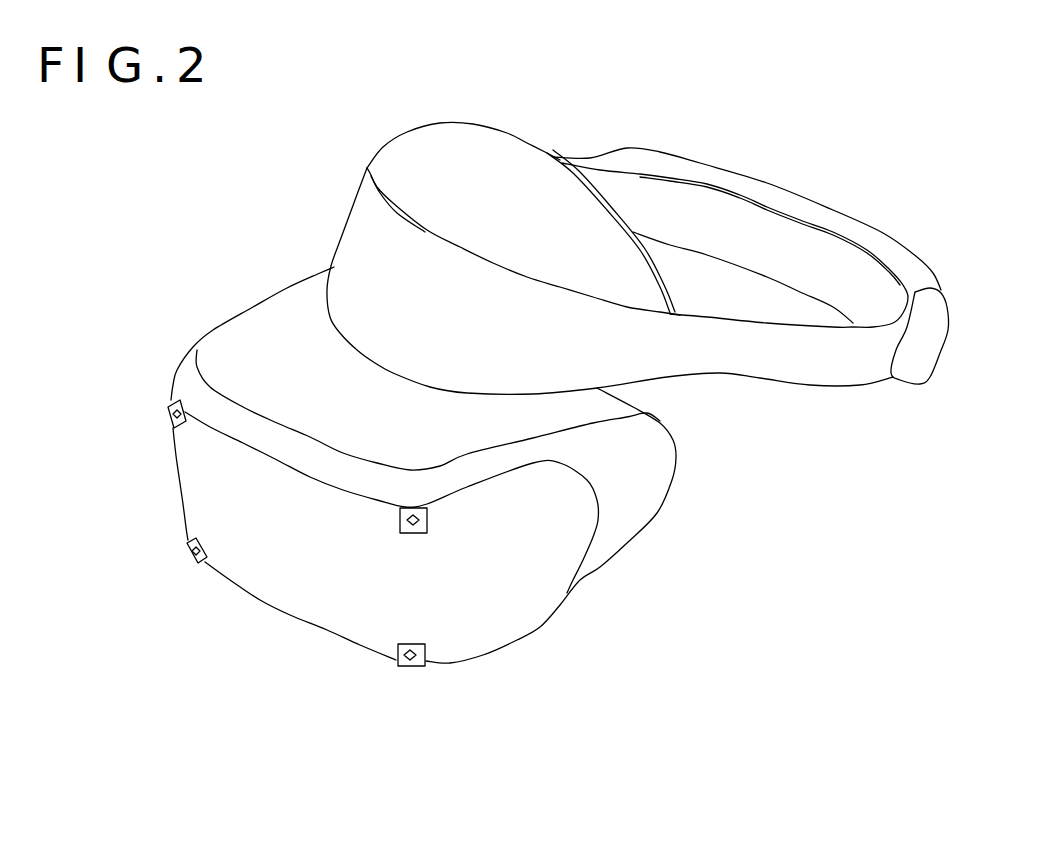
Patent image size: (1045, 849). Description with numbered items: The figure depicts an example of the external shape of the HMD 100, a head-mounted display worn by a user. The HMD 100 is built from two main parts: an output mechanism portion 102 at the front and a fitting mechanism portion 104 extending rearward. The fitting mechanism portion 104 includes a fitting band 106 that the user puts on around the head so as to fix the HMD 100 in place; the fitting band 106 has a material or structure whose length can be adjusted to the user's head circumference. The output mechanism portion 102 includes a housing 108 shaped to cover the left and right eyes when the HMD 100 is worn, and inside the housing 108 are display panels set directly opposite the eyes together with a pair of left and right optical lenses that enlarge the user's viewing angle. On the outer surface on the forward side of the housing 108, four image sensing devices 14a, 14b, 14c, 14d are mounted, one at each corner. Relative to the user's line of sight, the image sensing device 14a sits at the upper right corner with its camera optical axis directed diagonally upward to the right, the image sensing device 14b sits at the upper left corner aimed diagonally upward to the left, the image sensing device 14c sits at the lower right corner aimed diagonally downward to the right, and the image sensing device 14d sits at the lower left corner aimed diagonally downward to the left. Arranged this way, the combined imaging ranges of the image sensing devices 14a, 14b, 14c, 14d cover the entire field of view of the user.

The HMD 100 is at (510, 822).
The output mechanism portion 102 is at (120, 417).
The fitting mechanism portion 104 is at (814, 165).
The fitting band 106 is at (803, 387).
The housing 108 is at (565, 597).
The image sensing device 14a is at (168, 412).
The image sensing device 14b is at (403, 507).
The image sensing device 14c is at (187, 547).
The image sensing device 14d is at (400, 667).